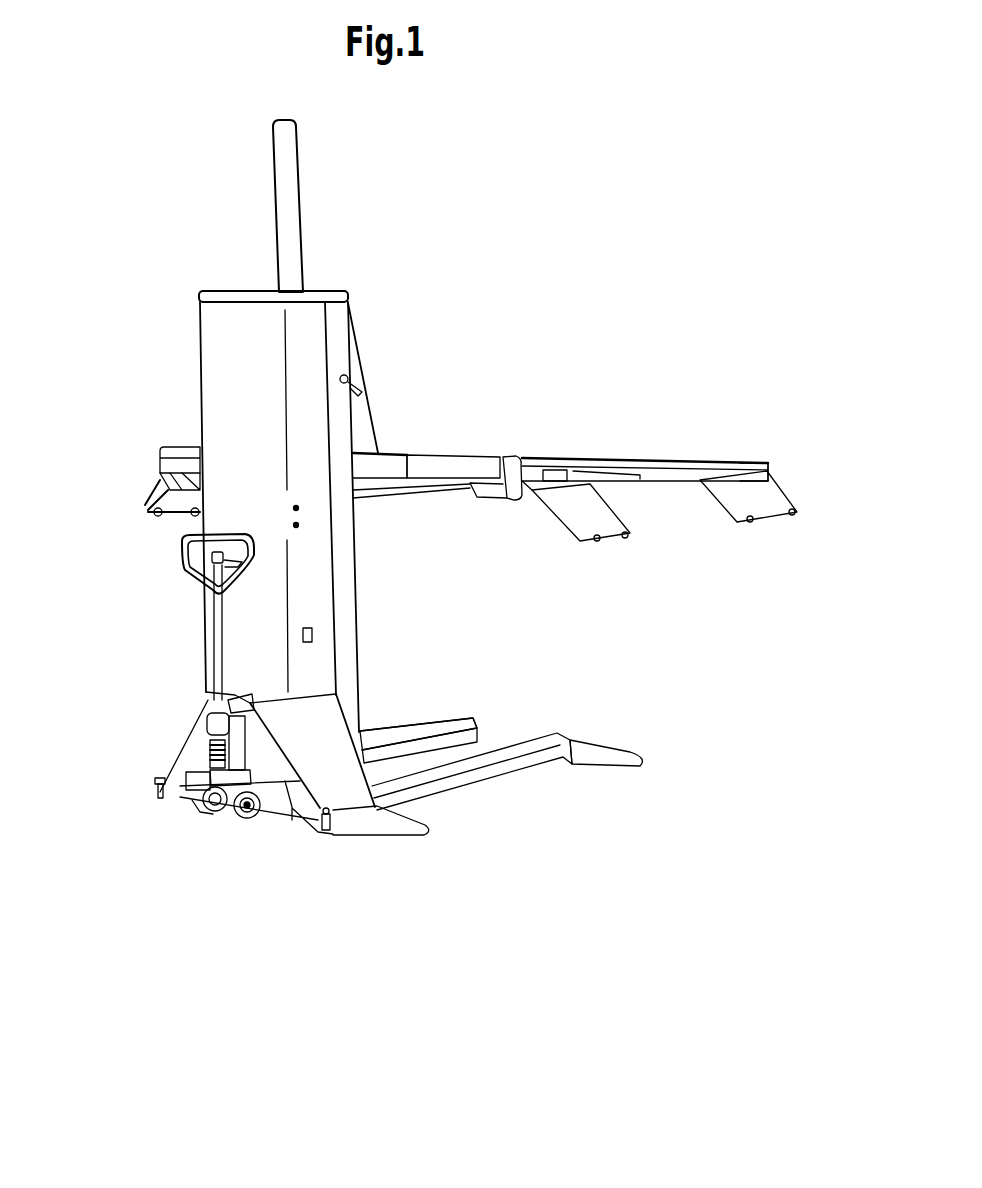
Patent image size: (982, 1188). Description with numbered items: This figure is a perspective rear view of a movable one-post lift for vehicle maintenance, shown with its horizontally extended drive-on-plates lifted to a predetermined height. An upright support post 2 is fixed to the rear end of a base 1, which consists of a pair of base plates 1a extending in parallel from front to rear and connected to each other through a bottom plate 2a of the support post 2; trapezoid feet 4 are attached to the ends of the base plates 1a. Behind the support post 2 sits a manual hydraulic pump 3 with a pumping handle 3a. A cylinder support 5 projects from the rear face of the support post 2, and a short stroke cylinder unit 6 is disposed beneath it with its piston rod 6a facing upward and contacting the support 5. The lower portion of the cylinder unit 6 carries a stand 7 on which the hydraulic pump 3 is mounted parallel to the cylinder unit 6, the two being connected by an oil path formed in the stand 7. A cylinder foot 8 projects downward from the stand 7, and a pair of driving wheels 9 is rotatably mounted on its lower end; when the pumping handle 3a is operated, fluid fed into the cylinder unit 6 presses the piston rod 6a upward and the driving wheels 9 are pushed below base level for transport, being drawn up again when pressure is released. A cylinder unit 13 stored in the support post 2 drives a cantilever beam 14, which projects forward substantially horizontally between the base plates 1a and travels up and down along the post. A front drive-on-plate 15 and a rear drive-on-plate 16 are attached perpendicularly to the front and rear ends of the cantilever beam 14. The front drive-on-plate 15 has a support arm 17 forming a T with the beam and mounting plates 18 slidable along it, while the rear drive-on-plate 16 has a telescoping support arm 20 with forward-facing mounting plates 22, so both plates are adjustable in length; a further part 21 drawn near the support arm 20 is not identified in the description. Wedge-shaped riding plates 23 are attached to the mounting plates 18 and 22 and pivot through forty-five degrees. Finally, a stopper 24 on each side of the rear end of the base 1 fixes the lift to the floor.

The base 1 is at (525, 717).
The base plate 1a is at (433, 722).
The support post 2 is at (220, 378).
The bottom plate 2a is at (270, 813).
The manual hydraulic pump 3 is at (188, 751).
The pumping handle 3a is at (207, 607).
The trapezoid foot 4 is at (393, 840).
The cylinder support 5 is at (230, 700).
The short stroke cylinder unit 6 is at (183, 807).
The piston rod 6a is at (207, 712).
The stand 7 is at (197, 827).
The cylinder foot 8 is at (220, 812).
The driving wheel 9 is at (240, 820).
The cylinder unit 13 is at (296, 227).
The cantilever beam 14 is at (420, 492).
The front drive-on-plate 15 is at (660, 443).
The rear drive-on-plate 16 is at (437, 440).
The support arm 17 is at (595, 462).
The mounting plate 18 is at (713, 463).
The support arm 20 is at (168, 463).
The bracket 21 is at (490, 493).
The mounting plate 22 is at (555, 482).
The riding plate 23 is at (640, 520).
The stopper 24 is at (160, 793).